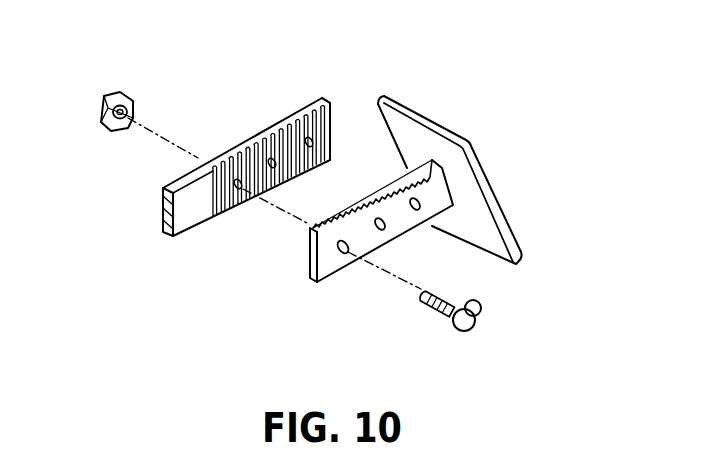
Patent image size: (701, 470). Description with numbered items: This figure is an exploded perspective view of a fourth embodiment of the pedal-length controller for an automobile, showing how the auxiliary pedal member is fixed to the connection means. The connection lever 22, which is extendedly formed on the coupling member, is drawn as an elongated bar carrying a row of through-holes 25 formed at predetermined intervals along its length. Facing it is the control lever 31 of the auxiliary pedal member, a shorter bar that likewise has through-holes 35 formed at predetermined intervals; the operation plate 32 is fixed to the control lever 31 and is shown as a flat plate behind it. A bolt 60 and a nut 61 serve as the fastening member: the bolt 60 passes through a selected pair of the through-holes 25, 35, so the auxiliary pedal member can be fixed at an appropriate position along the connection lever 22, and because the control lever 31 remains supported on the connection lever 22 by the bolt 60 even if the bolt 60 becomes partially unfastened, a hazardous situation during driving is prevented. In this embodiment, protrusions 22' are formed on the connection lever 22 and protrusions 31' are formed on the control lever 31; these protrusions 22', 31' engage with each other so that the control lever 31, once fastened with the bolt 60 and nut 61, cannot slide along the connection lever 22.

The connection lever 22 is at (258, 155).
The protrusions 22' is at (337, 97).
The through-holes 25 is at (241, 191).
The control lever 31 is at (365, 233).
The protrusions 31' is at (372, 175).
The operation plate 32 is at (510, 217).
The through-holes 35 is at (341, 252).
The bolt 60 is at (443, 316).
The nut 61 is at (100, 124).